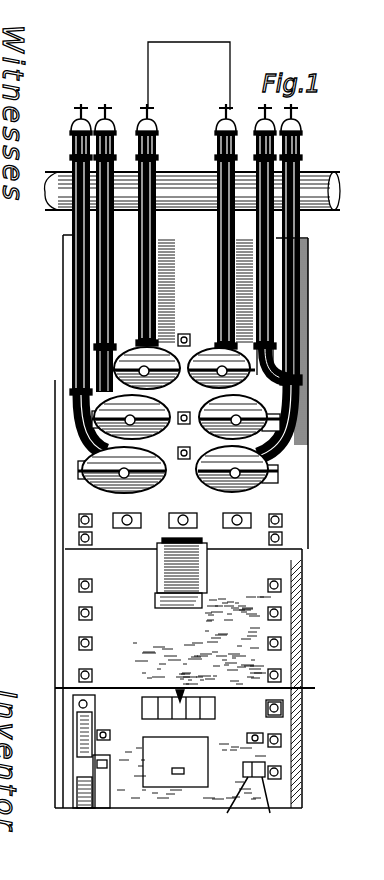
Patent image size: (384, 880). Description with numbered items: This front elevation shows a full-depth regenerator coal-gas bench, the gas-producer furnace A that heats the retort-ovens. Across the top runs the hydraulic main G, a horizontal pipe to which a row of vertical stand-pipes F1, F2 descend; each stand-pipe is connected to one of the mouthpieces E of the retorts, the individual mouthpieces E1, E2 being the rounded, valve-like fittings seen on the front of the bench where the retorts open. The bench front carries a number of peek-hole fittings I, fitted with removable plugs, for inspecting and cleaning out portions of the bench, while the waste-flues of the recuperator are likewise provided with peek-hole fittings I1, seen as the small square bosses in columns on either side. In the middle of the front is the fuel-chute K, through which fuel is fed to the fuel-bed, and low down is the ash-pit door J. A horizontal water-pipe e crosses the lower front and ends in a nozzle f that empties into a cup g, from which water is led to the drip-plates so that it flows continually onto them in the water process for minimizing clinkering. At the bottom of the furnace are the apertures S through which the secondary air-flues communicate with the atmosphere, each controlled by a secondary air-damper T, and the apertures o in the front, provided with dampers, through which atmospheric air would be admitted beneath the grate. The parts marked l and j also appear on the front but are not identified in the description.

The hydraulic main G is at (56, 178).
The stand-pipe F1 is at (72, 252).
The stand-pipe F2 is at (270, 278).
The gas-producer furnace A is at (63, 302).
The mouthpiece E is at (215, 362).
The mouthpiece E1 is at (88, 410).
The mouthpiece E2 is at (300, 410).
The peek-hole fitting I is at (120, 520).
The peek-hole fitting I1 is at (80, 585).
The fuel-chute K is at (157, 568).
The water-pipe e is at (55, 688).
The nozzle f is at (185, 700).
The secondary air-damper T is at (215, 710).
The gauge column l is at (74, 706).
The small box j is at (165, 770).
The ash-pit door J is at (125, 795).
The aperture S is at (100, 733).
The cup g is at (110, 735).
The aperture o is at (242, 798).